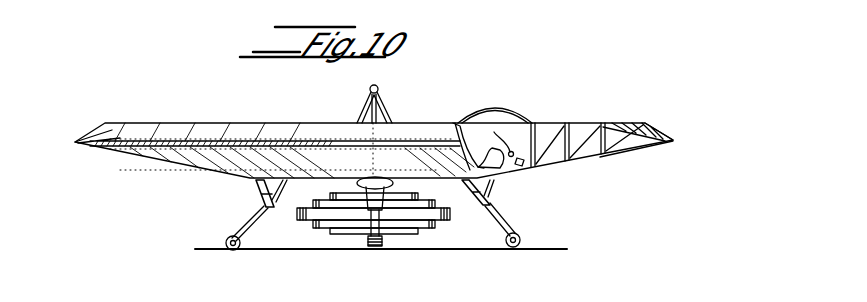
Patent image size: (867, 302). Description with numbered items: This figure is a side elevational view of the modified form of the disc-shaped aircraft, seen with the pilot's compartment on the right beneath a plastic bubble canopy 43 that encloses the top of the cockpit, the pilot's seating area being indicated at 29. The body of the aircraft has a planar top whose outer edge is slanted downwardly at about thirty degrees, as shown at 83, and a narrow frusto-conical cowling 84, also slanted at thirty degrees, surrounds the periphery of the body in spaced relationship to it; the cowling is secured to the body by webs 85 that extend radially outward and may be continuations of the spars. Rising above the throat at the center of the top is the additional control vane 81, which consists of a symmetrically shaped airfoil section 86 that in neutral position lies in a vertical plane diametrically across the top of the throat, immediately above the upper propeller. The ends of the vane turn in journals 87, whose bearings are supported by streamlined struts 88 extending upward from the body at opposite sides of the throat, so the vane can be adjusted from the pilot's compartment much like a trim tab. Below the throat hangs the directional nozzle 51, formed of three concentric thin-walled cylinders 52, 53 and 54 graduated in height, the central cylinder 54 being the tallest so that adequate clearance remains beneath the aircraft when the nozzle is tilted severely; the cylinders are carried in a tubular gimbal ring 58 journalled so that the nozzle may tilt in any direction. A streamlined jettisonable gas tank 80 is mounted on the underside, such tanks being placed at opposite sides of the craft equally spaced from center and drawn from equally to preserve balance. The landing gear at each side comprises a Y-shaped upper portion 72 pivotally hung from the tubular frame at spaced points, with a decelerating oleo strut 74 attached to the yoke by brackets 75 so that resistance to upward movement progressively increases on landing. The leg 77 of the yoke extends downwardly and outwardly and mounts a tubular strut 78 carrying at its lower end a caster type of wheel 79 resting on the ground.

The cockpit seat 29 is at (520, 136).
The bubble canopy 43 is at (500, 108).
The directional nozzle 51 is at (338, 232).
The thin-walled cylinder 52 is at (445, 216).
The thin-walled cylinder 53 is at (428, 227).
The central cylinder 54 is at (400, 234).
The tubular gimbal ring 58 is at (322, 212).
The Y-shaped upper portion 72 is at (279, 202).
The decelerating oleo strut 74 is at (492, 186).
The brackets 75 is at (262, 200).
The leg 77 is at (268, 214).
The tubular strut 78 is at (492, 214).
The caster type of wheel 79 is at (521, 240).
The jettisonable gas tanks 80 is at (382, 174).
The additional control vane 81 is at (366, 112).
The slanted outer edge of upper surface 83 is at (604, 126).
The frusto-conical cowling 84 is at (661, 129).
The webs 85 is at (651, 141).
The airfoil section 86 is at (383, 112).
The journals 87 is at (379, 91).
The streamlined struts 88 is at (371, 91).